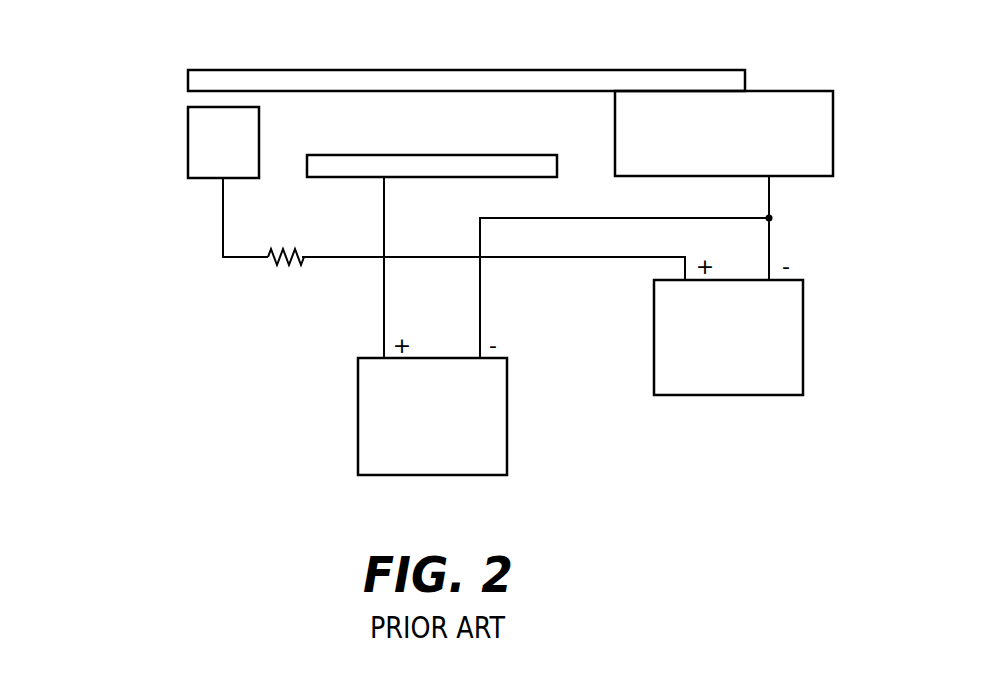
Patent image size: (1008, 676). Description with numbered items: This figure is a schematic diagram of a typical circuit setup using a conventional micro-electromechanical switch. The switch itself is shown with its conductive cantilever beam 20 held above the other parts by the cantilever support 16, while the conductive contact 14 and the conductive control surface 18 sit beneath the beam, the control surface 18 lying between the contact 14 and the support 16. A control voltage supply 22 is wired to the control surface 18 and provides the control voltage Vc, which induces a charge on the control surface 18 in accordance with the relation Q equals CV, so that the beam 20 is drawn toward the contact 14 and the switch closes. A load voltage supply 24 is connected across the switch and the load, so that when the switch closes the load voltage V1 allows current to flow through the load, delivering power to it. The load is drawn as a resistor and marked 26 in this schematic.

The conductive contact 14 is at (200, 137).
The cantilever support 16 is at (818, 138).
The conductive control surface 18 is at (397, 162).
The conductive cantilever beam 20 is at (668, 82).
The control voltage supply 22 is at (498, 447).
The load voltage supply 24 is at (793, 362).
The load resistor 26 is at (282, 247).